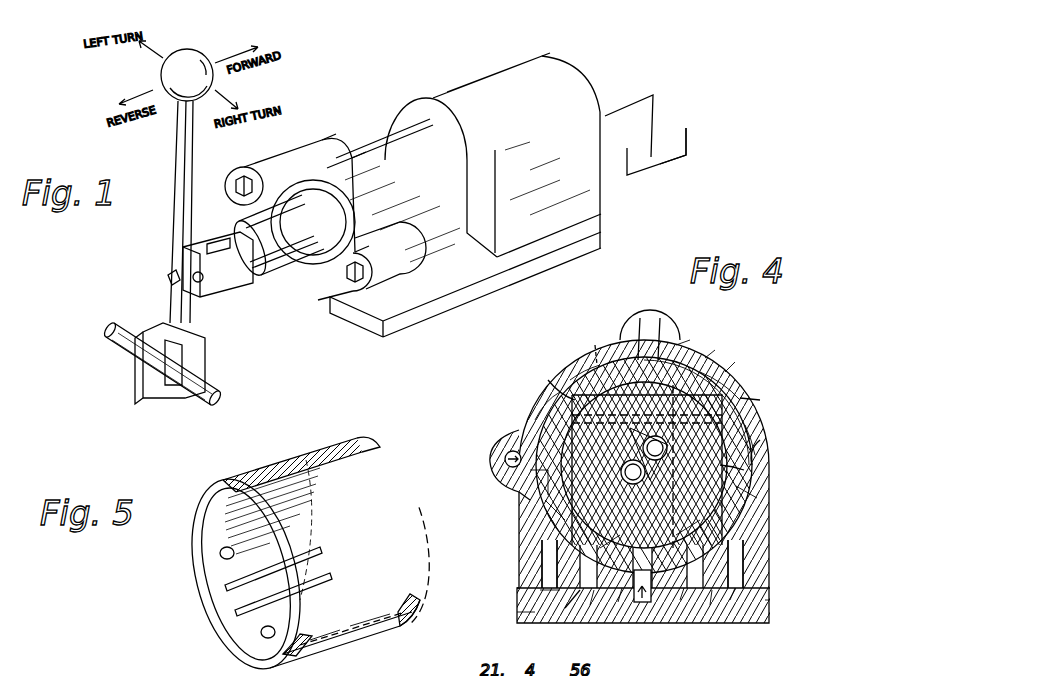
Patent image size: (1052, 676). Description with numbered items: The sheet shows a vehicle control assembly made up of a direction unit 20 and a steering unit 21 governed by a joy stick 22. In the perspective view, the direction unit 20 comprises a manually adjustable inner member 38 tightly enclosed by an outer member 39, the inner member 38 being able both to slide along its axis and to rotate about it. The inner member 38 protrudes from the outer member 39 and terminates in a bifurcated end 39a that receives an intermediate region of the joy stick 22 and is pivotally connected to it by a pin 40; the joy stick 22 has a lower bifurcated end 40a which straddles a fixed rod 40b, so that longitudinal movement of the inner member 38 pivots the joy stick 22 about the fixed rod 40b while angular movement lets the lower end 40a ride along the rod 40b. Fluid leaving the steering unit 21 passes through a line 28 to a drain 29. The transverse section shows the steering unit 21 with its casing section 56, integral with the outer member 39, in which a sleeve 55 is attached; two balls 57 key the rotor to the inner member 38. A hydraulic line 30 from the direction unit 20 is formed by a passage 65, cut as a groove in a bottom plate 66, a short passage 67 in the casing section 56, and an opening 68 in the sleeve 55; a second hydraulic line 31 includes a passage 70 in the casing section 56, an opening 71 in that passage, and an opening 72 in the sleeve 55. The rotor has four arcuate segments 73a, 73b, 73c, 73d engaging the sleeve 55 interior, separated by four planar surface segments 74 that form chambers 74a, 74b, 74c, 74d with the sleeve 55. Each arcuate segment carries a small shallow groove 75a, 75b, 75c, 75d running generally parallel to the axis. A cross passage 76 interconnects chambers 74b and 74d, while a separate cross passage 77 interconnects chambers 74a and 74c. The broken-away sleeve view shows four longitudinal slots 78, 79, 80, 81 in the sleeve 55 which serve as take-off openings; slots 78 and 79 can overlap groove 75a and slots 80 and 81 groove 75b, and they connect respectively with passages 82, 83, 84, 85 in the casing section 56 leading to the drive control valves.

In FIG. 1, the direction unit 20 is at (356, 137).
In FIG. 1, the steering unit 21 is at (484, 78).
In FIG. 1, the joy stick 22 is at (172, 216).
In FIG. 1, the line 28 is at (628, 105).
In FIG. 1, the drain 29 is at (694, 144).
In FIG. 4, the hydraulic line 30 is at (643, 603).
In FIG. 4, the hydraulic line 31 is at (505, 454).
In FIG. 1, the manually adjustable inner member 38 is at (296, 270).
In FIG. 1, the outer member 39 is at (337, 297).
In FIG. 1, the bifurcated end 39a is at (224, 283).
In FIG. 1, the pin 40 is at (183, 283).
In FIG. 1, the lower bifurcated end 40a is at (205, 358).
In FIG. 1, the fixed rod 40b is at (130, 363).
In FIG. 5, the sleeve 55 is at (200, 508).
In FIG. 4, the sleeve 55 is at (760, 466).
In FIG. 4, the casing section 56 is at (644, 465).
In FIG. 4, the balls 57 is at (636, 430).
In FIG. 4, the passage 65 is at (620, 602).
In FIG. 4, the bottom plate 66 is at (730, 600).
In FIG. 4, the short passage 67 is at (680, 600).
In FIG. 5, the opening 68 is at (260, 632).
In FIG. 4, the opening 68 is at (590, 605).
In FIG. 4, the passage 70 is at (512, 455).
In FIG. 4, the opening 71 is at (516, 483).
In FIG. 5, the opening 72 is at (220, 554).
In FIG. 4, the opening 72 is at (545, 502).
In FIG. 4, the arcuate segment 73a is at (540, 565).
In FIG. 4, the arcuate segment 73b is at (748, 525).
In FIG. 4, the arcuate segment 73c is at (742, 385).
In FIG. 4, the arcuate segment 73d is at (584, 352).
In FIG. 4, the planar surface segments 74 is at (650, 330).
In FIG. 4, the chamber 74a is at (536, 418).
In FIG. 4, the chamber 74b is at (565, 608).
In FIG. 4, the chamber 74c is at (760, 430).
In FIG. 4, the chamber 74d is at (676, 345).
In FIG. 4, the shallow groove 75a is at (540, 556).
In FIG. 4, the shallow groove 75b is at (750, 568).
In FIG. 4, the shallow groove 75c is at (735, 366).
In FIG. 4, the shallow groove 75d is at (596, 345).
In FIG. 4, the cross passage 76 is at (712, 356).
In FIG. 4, the cross passage 77 is at (760, 400).
In FIG. 5, the longitudinal slot 78 is at (300, 548).
In FIG. 4, the longitudinal slot 78 is at (560, 508).
In FIG. 5, the longitudinal slot 79 is at (318, 582).
In FIG. 4, the longitudinal slot 79 is at (606, 548).
In FIG. 5, the longitudinal slot 80 is at (342, 645).
In FIG. 4, the longitudinal slot 80 is at (678, 535).
In FIG. 5, the longitudinal slot 81 is at (405, 620).
In FIG. 4, the longitudinal slot 81 is at (757, 498).
In FIG. 4, the passage 82 is at (540, 590).
In FIG. 4, the passage 83 is at (527, 612).
In FIG. 4, the passage 84 is at (710, 605).
In FIG. 4, the passage 85 is at (766, 603).